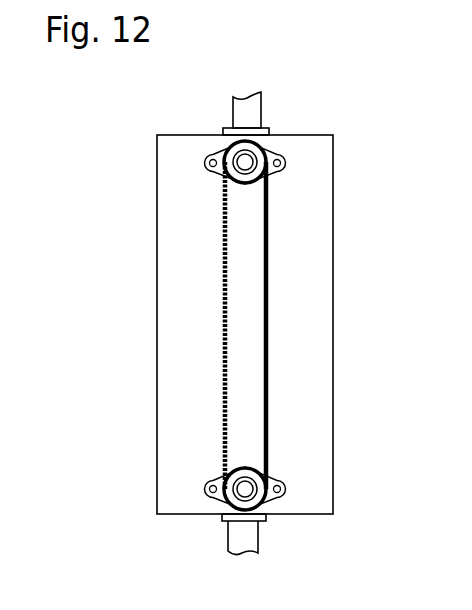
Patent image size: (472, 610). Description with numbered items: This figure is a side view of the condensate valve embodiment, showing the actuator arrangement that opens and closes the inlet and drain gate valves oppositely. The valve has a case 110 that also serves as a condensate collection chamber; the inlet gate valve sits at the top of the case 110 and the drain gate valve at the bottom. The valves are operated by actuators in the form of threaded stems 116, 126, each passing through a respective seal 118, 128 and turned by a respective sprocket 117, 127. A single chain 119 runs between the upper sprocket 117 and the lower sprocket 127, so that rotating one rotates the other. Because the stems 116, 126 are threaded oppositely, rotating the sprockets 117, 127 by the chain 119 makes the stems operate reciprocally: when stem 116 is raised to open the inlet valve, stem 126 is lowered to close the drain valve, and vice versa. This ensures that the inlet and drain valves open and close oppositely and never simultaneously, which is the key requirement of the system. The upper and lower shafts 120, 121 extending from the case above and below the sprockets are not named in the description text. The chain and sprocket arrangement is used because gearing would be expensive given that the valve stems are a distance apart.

The case 110 is at (323, 355).
The threaded stem 116 is at (240, 162).
The sprocket 117 is at (232, 148).
The seal 118 is at (280, 163).
The chain 119 is at (218, 285).
The drive shaft 120 is at (252, 103).
The driven shaft 121 is at (243, 538).
The threaded stem 126 is at (240, 489).
The sprocket 127 is at (235, 503).
The seal 128 is at (218, 501).